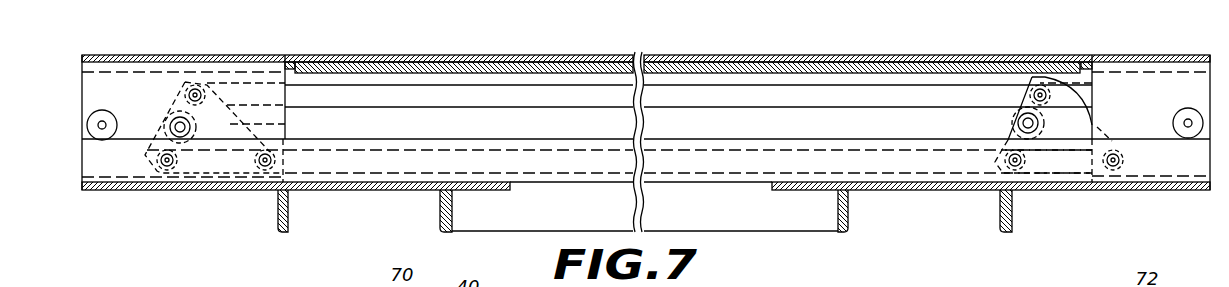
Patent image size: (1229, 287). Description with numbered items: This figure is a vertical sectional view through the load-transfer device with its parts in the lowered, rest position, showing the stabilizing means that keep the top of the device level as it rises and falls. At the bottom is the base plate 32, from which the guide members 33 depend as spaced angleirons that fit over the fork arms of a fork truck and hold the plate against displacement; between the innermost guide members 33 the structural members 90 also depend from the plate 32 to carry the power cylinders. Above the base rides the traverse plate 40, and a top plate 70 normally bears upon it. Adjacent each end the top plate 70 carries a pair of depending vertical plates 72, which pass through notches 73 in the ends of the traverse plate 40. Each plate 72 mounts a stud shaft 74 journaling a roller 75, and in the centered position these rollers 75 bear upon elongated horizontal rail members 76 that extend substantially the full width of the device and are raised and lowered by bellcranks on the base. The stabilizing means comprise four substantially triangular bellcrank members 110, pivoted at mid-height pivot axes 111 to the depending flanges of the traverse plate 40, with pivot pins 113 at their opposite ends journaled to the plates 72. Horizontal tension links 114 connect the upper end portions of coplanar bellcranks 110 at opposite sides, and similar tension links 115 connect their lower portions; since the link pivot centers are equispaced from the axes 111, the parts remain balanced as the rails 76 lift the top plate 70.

The base plate 32 is at (165, 191).
The guide members 33 is at (288, 212).
The traverse plate 40 is at (418, 62).
The top plate 70 is at (487, 57).
The vertical plates 72 is at (90, 82).
The notches 73 is at (288, 61).
The stud shaft 74 is at (87, 125).
The roller 75 is at (106, 117).
The rail members 76 is at (90, 157).
The structural members 90 is at (799, 219).
The bellcrank members 110 is at (285, 125).
The pivot axes 111 is at (163, 126).
The pivot pins 113 is at (262, 168).
The tension links 114 is at (726, 99).
The tension links 115 is at (778, 160).